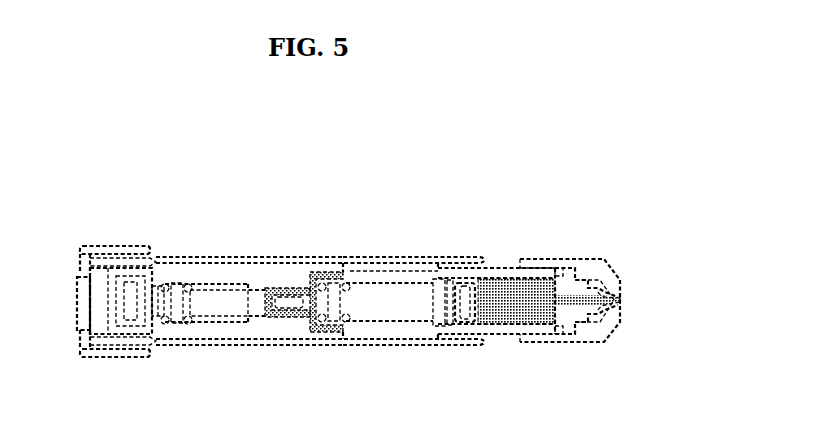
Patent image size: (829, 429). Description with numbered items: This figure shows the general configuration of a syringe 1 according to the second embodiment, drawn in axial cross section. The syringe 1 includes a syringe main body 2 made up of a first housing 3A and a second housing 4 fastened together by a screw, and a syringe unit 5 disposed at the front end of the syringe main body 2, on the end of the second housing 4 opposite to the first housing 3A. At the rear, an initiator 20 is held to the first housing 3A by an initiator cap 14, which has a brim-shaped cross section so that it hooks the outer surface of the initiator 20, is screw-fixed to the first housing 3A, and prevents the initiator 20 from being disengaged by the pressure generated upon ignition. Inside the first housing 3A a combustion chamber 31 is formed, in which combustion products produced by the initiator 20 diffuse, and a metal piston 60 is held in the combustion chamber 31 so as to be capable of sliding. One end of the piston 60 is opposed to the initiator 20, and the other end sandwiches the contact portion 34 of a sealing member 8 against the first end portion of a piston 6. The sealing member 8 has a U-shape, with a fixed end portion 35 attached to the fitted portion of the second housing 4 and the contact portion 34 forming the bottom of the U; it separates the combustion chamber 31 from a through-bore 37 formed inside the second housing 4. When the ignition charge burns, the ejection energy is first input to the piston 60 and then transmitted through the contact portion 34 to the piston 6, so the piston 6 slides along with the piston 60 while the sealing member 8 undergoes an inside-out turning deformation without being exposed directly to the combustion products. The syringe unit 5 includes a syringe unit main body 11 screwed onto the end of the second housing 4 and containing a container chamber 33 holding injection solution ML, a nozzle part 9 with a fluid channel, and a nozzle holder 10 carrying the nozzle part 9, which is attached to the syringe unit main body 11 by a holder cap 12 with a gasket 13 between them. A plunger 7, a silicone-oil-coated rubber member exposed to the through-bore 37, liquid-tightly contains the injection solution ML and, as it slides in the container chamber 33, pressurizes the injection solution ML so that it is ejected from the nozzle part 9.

The syringe 1 is at (626, 350).
The syringe main body 2 is at (432, 378).
The first housing 3A is at (264, 347).
The second housing 4 is at (373, 347).
The syringe unit 5 is at (551, 240).
The piston 6 is at (363, 296).
The plunger 7 is at (465, 298).
The sealing member 8 is at (278, 296).
The nozzle part 9 is at (623, 300).
The nozzle holder 10 is at (572, 324).
The syringe unit main body 11 is at (500, 334).
The holder cap 12 is at (600, 262).
The gasket 13 is at (562, 273).
The initiator cap 14 is at (122, 250).
The initiator 20 is at (80, 299).
The combustion chamber 31 is at (197, 283).
The container chamber 33 is at (529, 326).
The contact portion 34 is at (290, 298).
The fixed end portion 35 is at (313, 278).
The through-bore 37 is at (408, 279).
The piston 60 is at (230, 300).
The injection solution ML is at (510, 290).